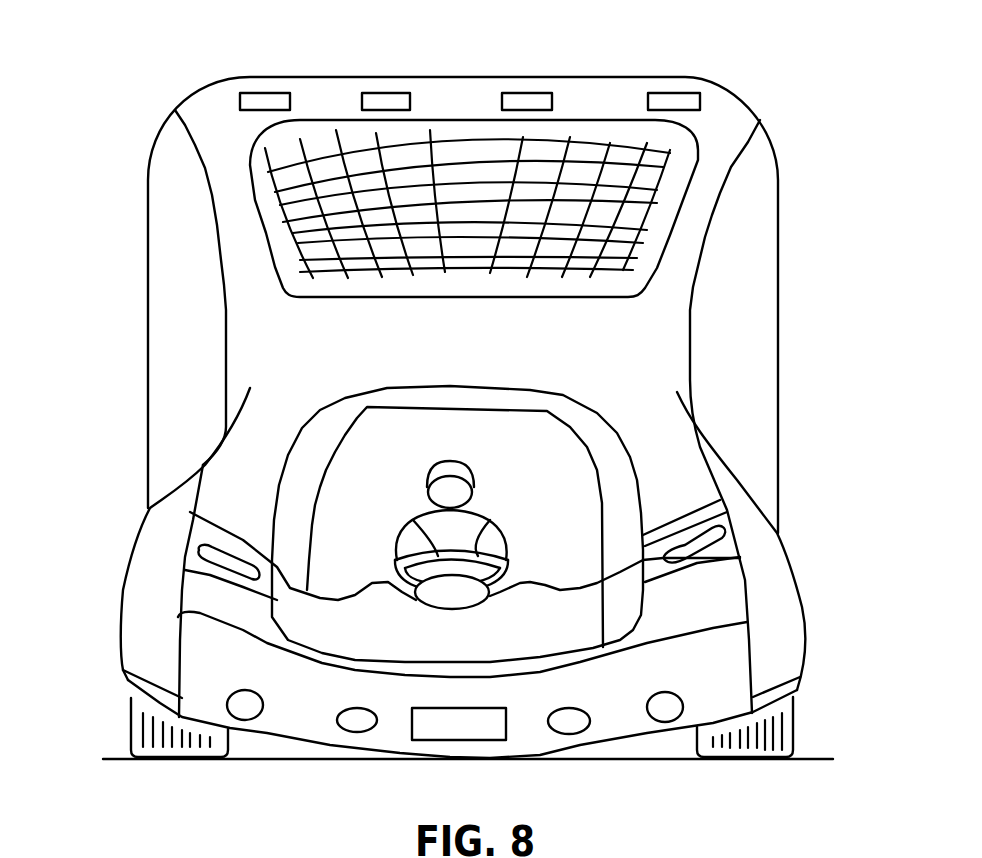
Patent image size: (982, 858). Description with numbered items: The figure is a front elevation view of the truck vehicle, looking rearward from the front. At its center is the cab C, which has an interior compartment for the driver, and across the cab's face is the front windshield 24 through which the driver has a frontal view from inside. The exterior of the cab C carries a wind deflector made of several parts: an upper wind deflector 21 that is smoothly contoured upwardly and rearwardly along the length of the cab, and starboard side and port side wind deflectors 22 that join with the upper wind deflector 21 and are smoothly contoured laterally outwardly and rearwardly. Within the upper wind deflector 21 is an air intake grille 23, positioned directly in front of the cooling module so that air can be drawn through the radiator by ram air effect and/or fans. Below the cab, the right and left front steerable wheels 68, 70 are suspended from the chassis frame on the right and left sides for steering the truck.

The upper wind deflector 21 is at (437, 92).
The side wind deflectors 22 is at (148, 278).
The air intake grille 23 is at (252, 166).
The front windshield 24 is at (402, 432).
The cab C is at (635, 460).
The right front steerable wheel 68 is at (130, 728).
The left front steerable wheel 70 is at (793, 737).